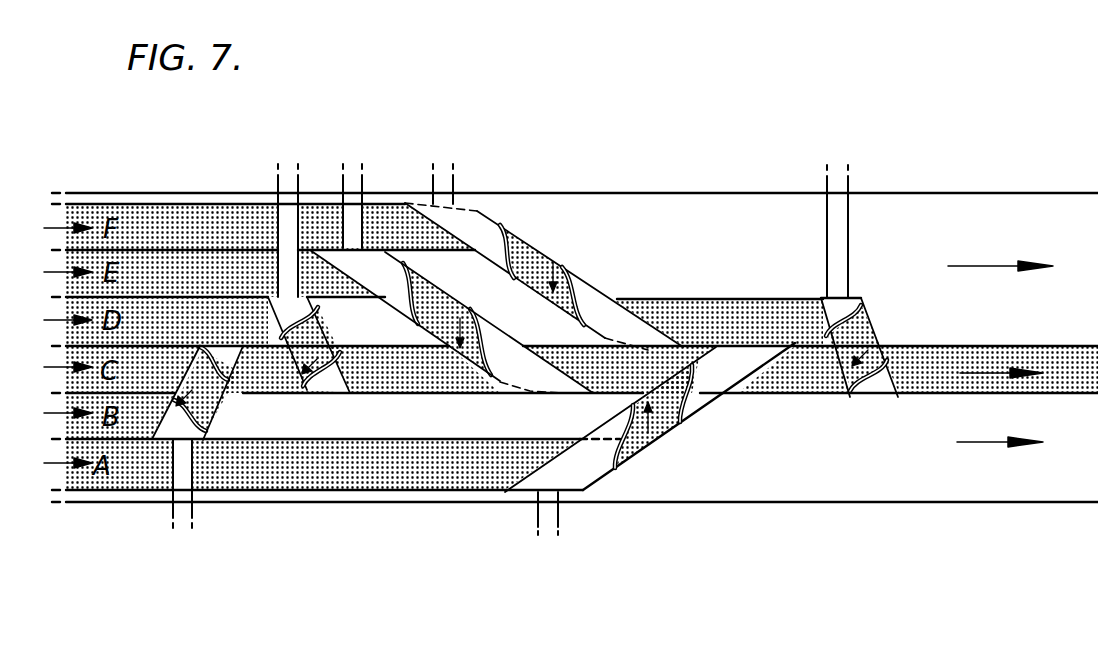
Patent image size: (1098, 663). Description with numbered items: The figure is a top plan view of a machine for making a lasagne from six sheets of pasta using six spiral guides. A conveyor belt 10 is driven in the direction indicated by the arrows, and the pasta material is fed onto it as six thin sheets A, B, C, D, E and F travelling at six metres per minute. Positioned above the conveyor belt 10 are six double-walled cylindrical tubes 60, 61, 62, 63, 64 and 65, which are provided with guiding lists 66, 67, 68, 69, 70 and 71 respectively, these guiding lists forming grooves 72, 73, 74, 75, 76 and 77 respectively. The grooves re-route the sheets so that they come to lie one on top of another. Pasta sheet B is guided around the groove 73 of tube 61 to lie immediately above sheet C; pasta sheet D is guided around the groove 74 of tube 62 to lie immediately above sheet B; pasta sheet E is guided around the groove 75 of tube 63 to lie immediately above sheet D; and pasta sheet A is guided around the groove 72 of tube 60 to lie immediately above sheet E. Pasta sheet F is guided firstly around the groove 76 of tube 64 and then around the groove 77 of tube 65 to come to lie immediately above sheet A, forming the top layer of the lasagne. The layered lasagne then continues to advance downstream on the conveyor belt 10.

The conveyor belt 10 is at (1033, 210).
The double-walled cylindrical tube 60 is at (573, 467).
The double-walled cylindrical tube 61 is at (173, 432).
The double-walled cylindrical tube 62 is at (317, 393).
The double-walled cylindrical tube 63 is at (284, 336).
The double-walled cylindrical tube 64 is at (468, 222).
The double-walled cylindrical tube 65 is at (845, 325).
The guiding list 66 is at (688, 400).
The guiding list 67 is at (170, 402).
The guiding list 68 is at (332, 378).
The guiding list 69 is at (386, 251).
The guiding list 70 is at (580, 282).
The guiding list 71 is at (822, 300).
The groove 72 is at (633, 458).
The groove 73 is at (197, 344).
The groove 74 is at (352, 394).
The groove 75 is at (430, 272).
The groove 76 is at (522, 250).
The groove 77 is at (872, 380).